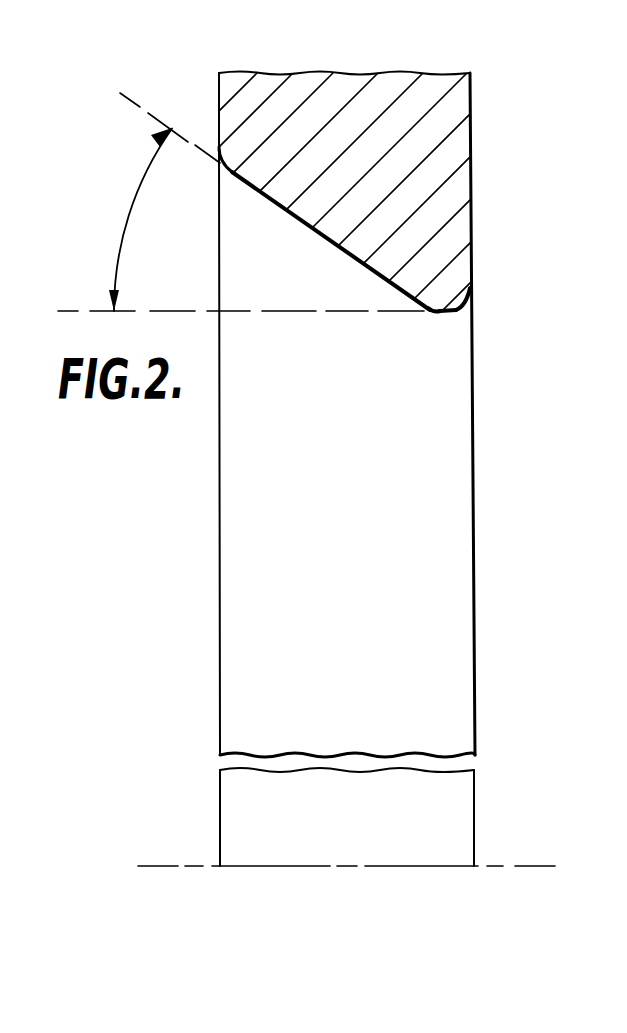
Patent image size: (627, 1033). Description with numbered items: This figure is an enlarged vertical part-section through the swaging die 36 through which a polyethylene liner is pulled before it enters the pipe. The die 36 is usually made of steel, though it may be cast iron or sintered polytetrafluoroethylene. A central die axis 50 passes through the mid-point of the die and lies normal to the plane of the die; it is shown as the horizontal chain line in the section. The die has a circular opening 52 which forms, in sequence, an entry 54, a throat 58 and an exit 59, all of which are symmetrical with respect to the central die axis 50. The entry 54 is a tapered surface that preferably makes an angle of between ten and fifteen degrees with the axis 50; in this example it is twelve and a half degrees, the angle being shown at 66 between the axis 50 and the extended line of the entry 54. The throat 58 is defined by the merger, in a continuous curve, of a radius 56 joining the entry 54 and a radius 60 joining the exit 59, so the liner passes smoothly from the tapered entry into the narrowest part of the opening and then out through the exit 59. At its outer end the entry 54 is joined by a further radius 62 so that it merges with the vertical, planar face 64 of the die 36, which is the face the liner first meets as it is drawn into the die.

The swaging die 36 is at (432, 130).
The central die axis 50 is at (298, 864).
The circular opening 52 is at (205, 580).
The entry 54 is at (331, 250).
The radius 56 is at (434, 314).
The throat 58 is at (448, 313).
The exit 59 is at (480, 458).
The radius 60 is at (474, 316).
The radius 62 is at (220, 178).
The vertical planar face 64 is at (219, 94).
The entry angle 66 is at (130, 207).